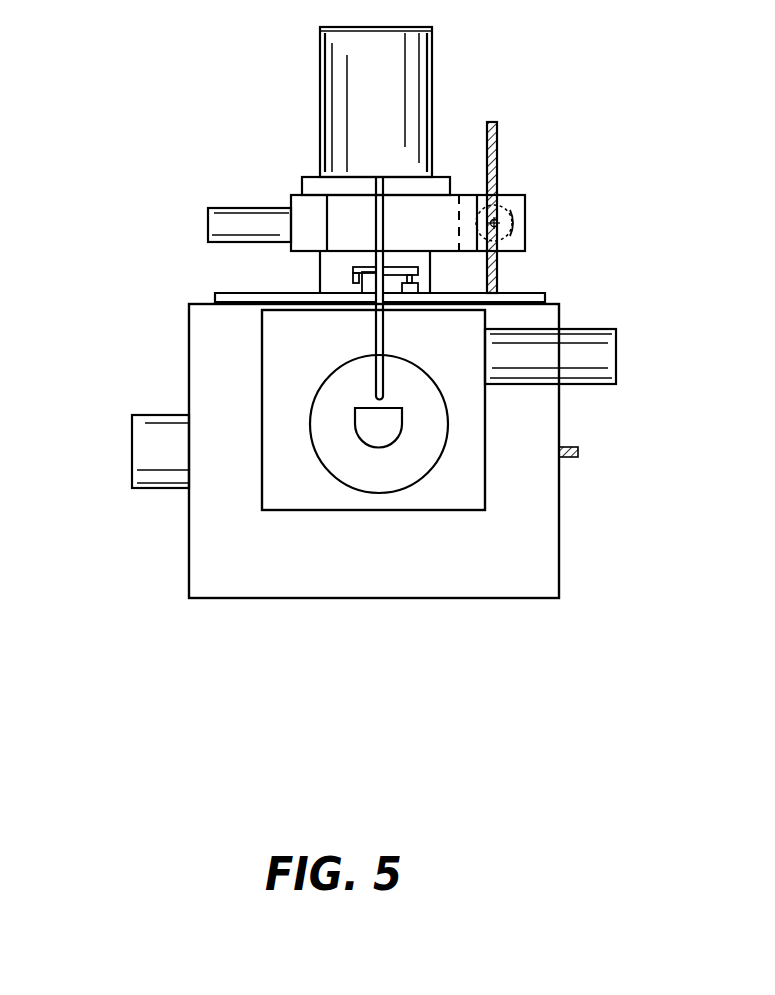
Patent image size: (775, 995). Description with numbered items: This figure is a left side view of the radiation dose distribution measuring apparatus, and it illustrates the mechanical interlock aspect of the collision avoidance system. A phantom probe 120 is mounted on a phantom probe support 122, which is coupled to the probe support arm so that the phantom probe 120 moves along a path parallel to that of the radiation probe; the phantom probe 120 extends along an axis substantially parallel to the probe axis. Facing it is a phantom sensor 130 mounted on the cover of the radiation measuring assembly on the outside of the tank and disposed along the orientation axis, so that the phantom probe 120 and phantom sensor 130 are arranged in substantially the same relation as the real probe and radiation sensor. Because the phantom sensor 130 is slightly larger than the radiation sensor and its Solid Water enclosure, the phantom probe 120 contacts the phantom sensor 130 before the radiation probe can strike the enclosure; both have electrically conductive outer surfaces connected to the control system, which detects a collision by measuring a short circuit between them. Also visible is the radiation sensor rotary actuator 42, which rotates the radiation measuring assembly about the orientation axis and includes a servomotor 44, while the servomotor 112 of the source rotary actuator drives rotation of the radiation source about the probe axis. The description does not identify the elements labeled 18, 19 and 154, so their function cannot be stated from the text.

The base 18 is at (559, 580).
The base portion 19 is at (189, 578).
The radiation sensor rotary actuator 42 is at (467, 424).
The servomotor 44 is at (562, 343).
The servomotor 112 is at (245, 221).
The phantom probe 120 is at (376, 342).
The phantom probe support 122 is at (338, 213).
The phantom sensor 130 is at (358, 422).
The actuator assembly 154 is at (357, 270).